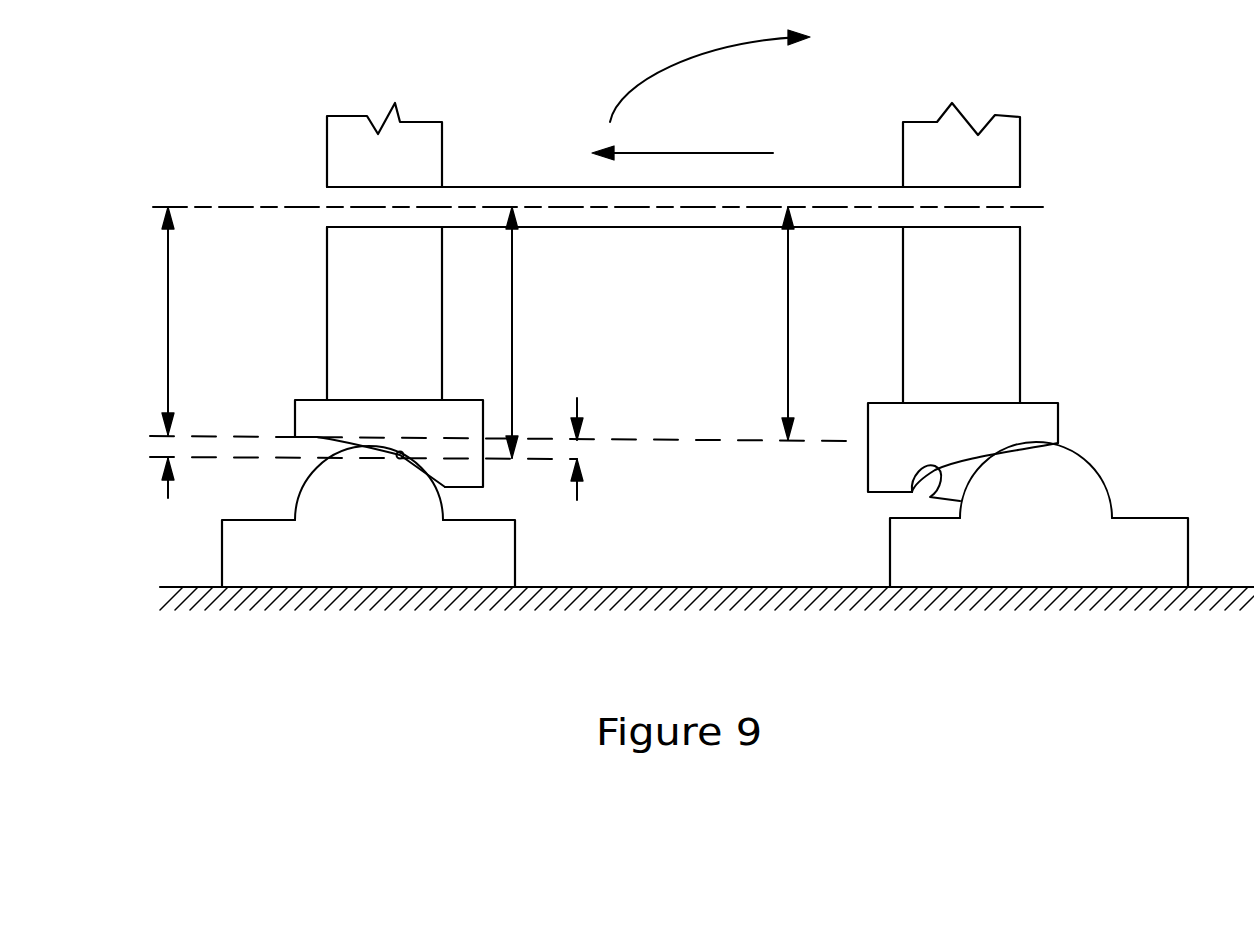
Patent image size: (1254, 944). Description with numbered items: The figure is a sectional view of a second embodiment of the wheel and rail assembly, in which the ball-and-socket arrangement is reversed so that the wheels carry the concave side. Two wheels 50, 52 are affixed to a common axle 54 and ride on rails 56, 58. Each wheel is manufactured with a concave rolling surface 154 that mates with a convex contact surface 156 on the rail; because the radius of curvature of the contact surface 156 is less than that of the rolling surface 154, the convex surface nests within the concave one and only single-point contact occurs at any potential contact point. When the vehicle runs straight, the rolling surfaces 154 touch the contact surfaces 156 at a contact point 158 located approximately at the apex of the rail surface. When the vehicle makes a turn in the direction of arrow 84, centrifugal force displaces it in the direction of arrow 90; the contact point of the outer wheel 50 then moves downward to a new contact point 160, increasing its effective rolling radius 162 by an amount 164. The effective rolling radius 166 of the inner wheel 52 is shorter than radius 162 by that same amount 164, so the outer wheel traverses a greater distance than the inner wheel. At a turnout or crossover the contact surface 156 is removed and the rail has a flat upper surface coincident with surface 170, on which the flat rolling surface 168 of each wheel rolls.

The wheel 50 is at (350, 163).
The wheel 52 is at (1000, 162).
The axle 54 is at (546, 186).
The rail 56 is at (480, 573).
The rail 58 is at (1032, 575).
The arrow 84 is at (671, 62).
The arrow 90 is at (673, 153).
The concave rolling surface 154 is at (317, 441).
The convex contact surface 156 is at (298, 497).
The contact point 158 is at (360, 447).
The contact point 160 is at (399, 460).
The effective rolling radius 162 is at (513, 355).
The amount 164 is at (168, 452).
The effective rolling radius 166 is at (168, 332).
The flat rolling surface 168 is at (462, 487).
The surface 170 is at (498, 517).